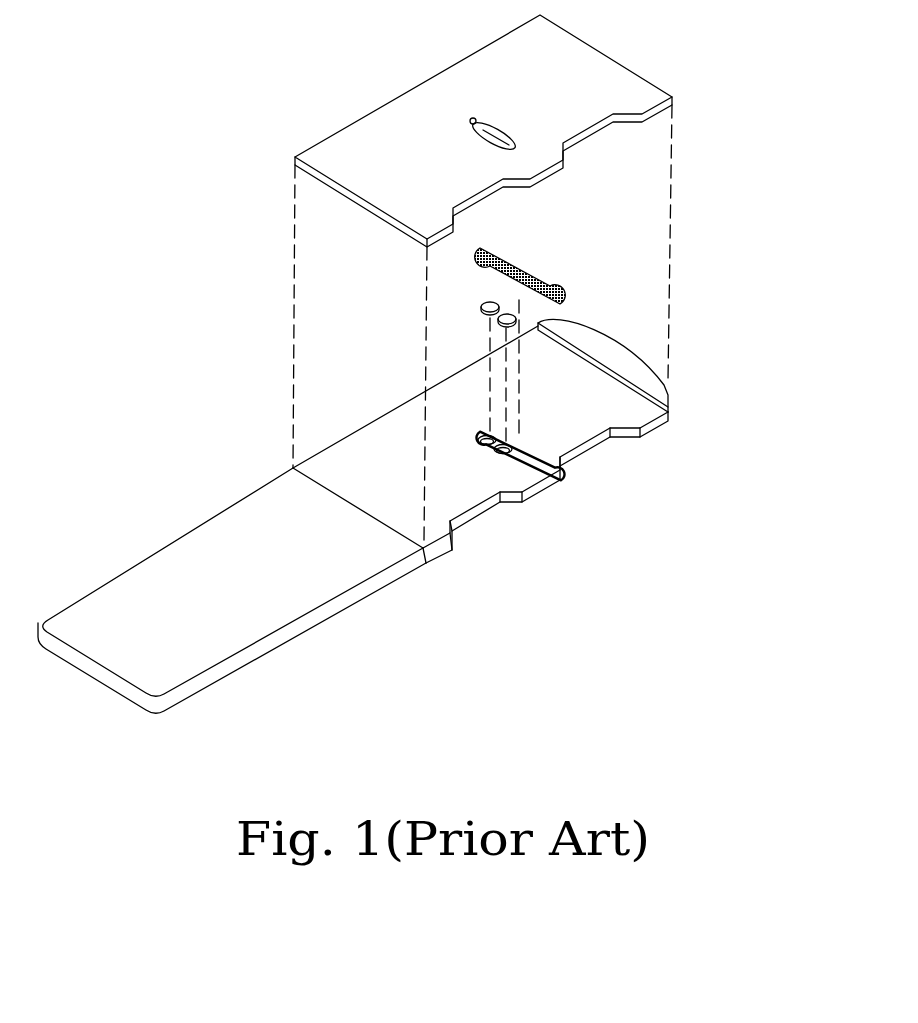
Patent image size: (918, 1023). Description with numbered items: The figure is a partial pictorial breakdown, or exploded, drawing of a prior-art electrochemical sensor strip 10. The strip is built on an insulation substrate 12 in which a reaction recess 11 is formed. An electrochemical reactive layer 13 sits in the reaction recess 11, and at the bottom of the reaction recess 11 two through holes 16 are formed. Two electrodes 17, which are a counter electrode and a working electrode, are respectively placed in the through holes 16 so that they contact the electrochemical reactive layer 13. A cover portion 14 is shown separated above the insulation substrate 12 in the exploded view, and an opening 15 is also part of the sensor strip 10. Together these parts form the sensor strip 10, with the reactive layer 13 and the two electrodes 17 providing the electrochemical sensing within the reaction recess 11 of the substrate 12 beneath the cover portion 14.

The electrochemical sensor strip 10 is at (699, 325).
The reaction recess 11 is at (532, 465).
The insulation substrate 12 is at (320, 631).
The electrochemical reactive layer 13 is at (530, 271).
The cover portion 14 is at (648, 70).
The opening 15 is at (558, 477).
The through holes 16 is at (478, 444).
The electrodes 17 is at (482, 304).